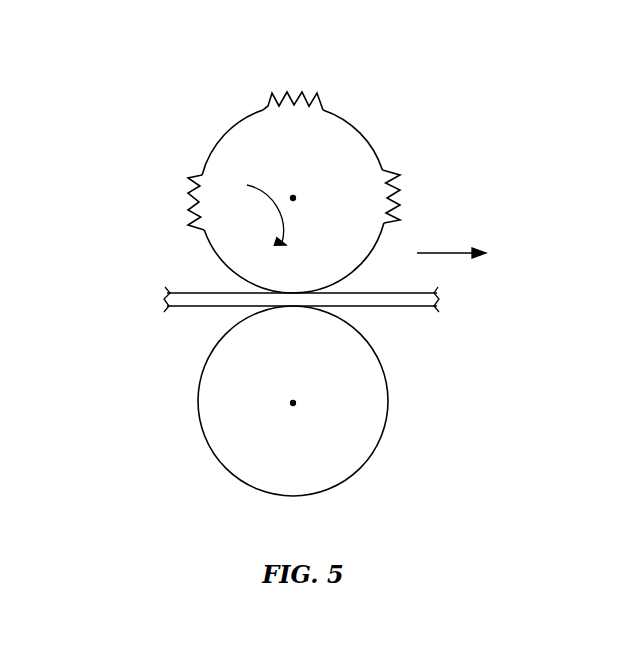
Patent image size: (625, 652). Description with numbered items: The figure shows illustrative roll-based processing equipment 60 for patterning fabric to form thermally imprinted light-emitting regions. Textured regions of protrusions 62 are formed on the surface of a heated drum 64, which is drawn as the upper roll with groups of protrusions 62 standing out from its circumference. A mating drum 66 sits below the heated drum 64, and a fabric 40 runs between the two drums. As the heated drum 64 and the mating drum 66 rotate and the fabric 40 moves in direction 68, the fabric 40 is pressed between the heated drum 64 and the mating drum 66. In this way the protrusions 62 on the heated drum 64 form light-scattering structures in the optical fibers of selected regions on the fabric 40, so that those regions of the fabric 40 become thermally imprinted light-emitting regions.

The fabric 40 is at (191, 306).
The embossing apparatus 60 is at (465, 126).
The protrusions 62 is at (292, 78).
The heated drum 64 is at (230, 148).
The mating drum 66 is at (313, 482).
The direction 68 is at (453, 257).